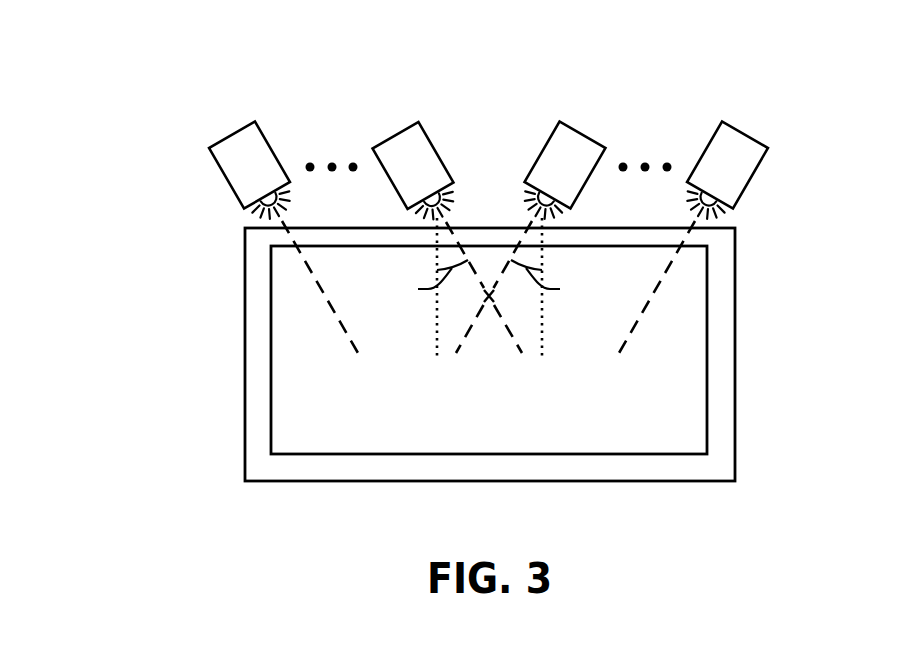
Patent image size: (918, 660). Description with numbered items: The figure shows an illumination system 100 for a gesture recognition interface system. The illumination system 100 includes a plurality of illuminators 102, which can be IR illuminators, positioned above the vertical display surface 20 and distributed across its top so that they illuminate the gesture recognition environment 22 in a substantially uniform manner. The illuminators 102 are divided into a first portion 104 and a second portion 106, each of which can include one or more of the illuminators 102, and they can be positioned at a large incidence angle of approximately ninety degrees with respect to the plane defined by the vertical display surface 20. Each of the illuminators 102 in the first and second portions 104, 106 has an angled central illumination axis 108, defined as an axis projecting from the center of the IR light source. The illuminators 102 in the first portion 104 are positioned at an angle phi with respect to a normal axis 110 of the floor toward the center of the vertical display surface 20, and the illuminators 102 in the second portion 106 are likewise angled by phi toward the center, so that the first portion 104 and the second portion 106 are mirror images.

The illumination system 100 is at (117, 31).
The vertical display surface 20 is at (245, 322).
The gesture recognition environment 22 is at (321, 441).
The illuminators 102 is at (218, 143).
The first portion 104 is at (272, 83).
The second portion 106 is at (693, 81).
The central illumination axis 108 is at (515, 343).
The normal axis 110 is at (437, 317).